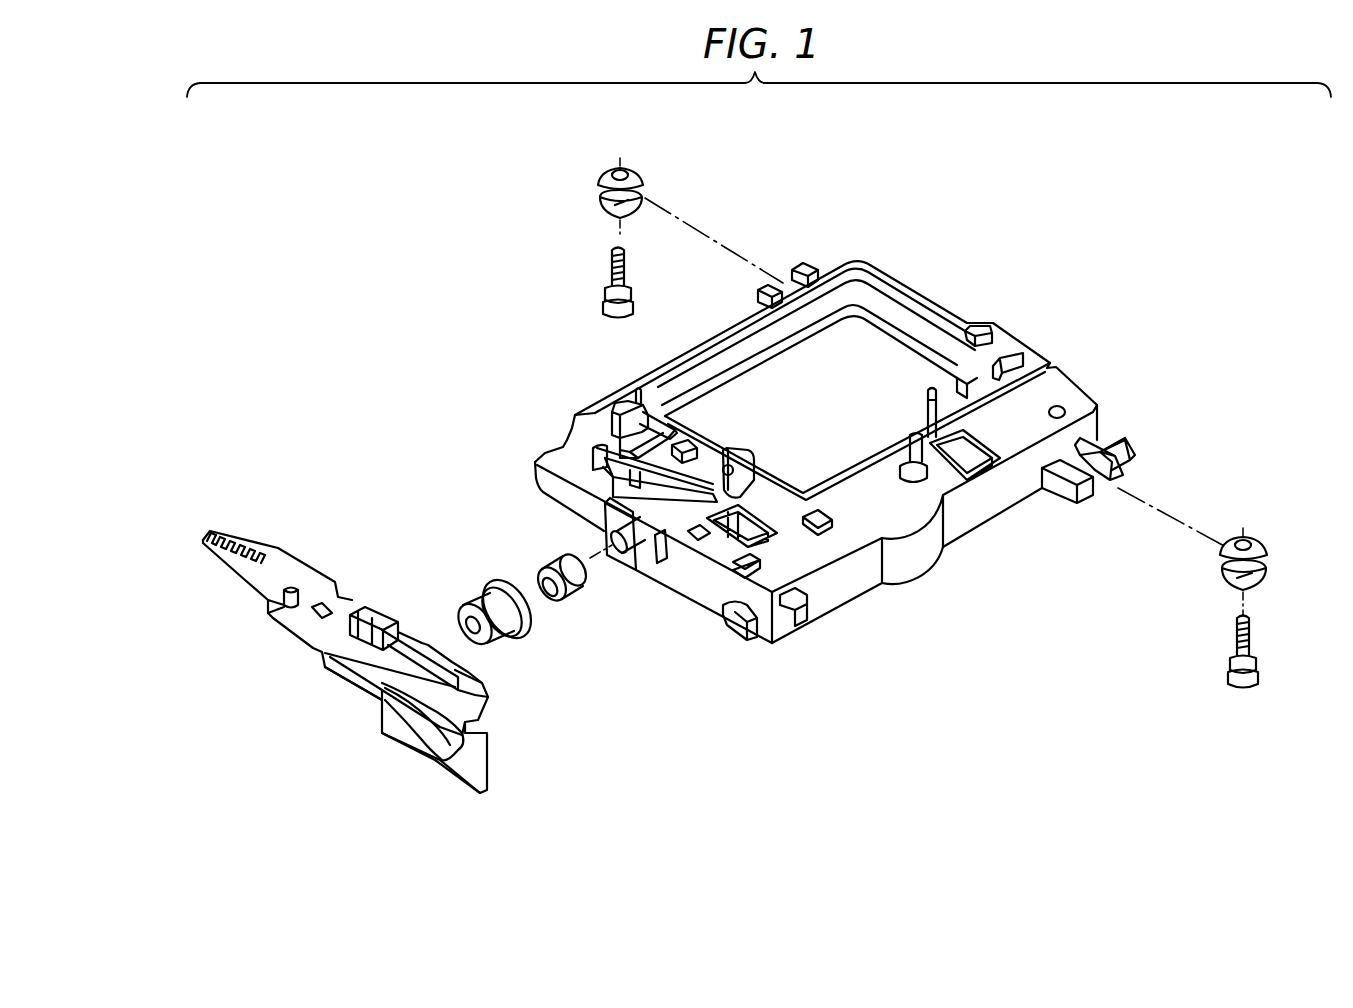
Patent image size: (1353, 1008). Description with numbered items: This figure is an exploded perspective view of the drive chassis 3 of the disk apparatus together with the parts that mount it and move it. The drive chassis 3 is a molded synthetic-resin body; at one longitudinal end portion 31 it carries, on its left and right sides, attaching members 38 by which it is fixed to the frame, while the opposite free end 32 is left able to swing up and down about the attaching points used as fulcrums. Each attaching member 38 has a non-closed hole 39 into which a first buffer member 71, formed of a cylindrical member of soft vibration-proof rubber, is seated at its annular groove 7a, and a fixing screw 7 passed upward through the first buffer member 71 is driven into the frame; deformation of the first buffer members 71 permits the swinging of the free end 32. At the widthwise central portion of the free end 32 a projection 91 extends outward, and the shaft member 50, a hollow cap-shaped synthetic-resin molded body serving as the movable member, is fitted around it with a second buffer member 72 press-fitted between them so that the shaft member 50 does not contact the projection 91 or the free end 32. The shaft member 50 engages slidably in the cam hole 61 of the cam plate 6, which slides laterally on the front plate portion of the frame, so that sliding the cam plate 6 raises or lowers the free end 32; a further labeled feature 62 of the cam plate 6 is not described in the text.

The drive chassis 3 is at (990, 508).
The longitudinal end portion 31 is at (928, 300).
The free end 32 is at (700, 597).
The attaching member 38 is at (796, 265).
The non-closed hole 39 is at (758, 286).
The fixing screw 7 is at (608, 275).
The annular groove 7a is at (632, 212).
The first buffer member 71 is at (645, 180).
The second buffer member 72 is at (568, 603).
The projection 91 is at (628, 560).
The shaft member 50 is at (470, 600).
The cam plate 6 is at (392, 750).
The cam hole 61 is at (440, 757).
The pin of lever 62 is at (283, 620).